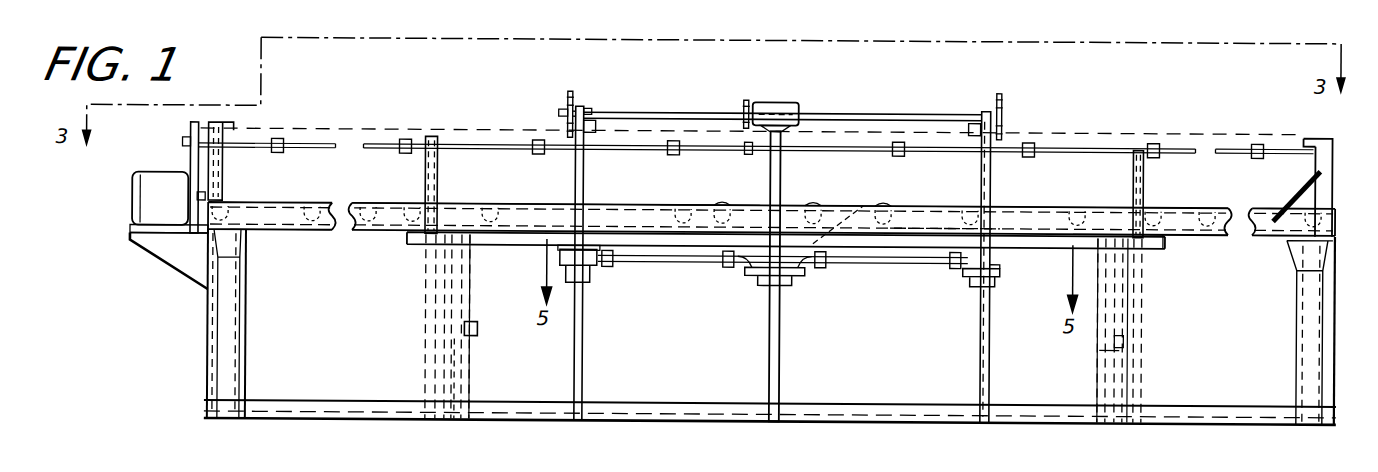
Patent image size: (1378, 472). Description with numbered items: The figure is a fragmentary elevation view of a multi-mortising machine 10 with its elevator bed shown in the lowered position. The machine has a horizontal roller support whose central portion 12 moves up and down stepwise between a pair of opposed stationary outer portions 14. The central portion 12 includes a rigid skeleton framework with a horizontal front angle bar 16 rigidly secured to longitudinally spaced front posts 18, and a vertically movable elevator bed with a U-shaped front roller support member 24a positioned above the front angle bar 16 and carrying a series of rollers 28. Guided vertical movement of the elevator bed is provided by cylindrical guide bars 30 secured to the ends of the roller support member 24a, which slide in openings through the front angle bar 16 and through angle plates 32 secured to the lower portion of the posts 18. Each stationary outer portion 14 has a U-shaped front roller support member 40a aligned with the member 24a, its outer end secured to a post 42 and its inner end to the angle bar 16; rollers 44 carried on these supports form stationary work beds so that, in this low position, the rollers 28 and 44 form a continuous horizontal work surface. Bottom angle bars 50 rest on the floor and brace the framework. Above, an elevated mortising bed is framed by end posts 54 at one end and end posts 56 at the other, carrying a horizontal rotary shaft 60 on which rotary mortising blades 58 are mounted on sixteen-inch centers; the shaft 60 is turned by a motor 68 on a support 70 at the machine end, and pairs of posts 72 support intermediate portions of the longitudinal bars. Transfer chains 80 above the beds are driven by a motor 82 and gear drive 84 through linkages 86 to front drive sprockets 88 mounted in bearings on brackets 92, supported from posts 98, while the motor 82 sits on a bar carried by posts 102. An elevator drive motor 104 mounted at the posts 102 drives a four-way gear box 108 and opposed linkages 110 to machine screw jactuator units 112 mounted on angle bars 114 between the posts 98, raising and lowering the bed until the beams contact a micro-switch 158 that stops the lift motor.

The multi-mortising machine 10 is at (1081, 120).
The central portion 12 is at (701, 195).
The stationary outer portions 14 is at (383, 200).
The front angle bar 16 is at (648, 234).
The front posts 18 is at (447, 306).
The front roller support member 24a is at (932, 226).
The rollers 28 is at (722, 205).
The guide bars 30 is at (472, 386).
The angle plates 32 is at (478, 332).
The front roller support member 40a is at (280, 236).
The posts 42 is at (243, 326).
The rollers 44 is at (360, 205).
The bottom angle bars 50 is at (1249, 408).
The end posts 54 is at (222, 168).
The end posts 56 is at (1333, 182).
The rotary mortising blades 58 is at (280, 140).
The rotary shaft 60 is at (748, 155).
The motor 68 is at (142, 176).
The support 70 is at (170, 275).
The posts 72 is at (437, 180).
The transfer chains 80 is at (572, 96).
The motor 82 is at (781, 102).
The gear drive 84 is at (744, 101).
The linkages 86 is at (705, 113).
The front drive sprockets 88 is at (558, 120).
The brackets 92 is at (585, 112).
The posts 98 is at (583, 180).
The posts 102 is at (781, 173).
The elevator drive motor 104 is at (863, 203).
The four-way gear box 108 is at (742, 270).
The linkages 110 is at (674, 264).
The machine screw jactuator units 112 is at (597, 275).
The angle bars 114 is at (1000, 279).
The micro-switch 158 is at (592, 133).